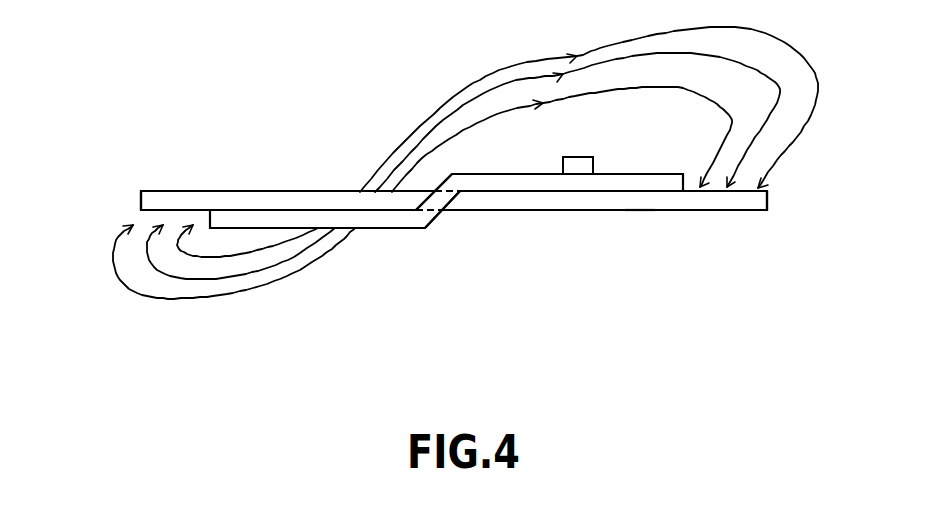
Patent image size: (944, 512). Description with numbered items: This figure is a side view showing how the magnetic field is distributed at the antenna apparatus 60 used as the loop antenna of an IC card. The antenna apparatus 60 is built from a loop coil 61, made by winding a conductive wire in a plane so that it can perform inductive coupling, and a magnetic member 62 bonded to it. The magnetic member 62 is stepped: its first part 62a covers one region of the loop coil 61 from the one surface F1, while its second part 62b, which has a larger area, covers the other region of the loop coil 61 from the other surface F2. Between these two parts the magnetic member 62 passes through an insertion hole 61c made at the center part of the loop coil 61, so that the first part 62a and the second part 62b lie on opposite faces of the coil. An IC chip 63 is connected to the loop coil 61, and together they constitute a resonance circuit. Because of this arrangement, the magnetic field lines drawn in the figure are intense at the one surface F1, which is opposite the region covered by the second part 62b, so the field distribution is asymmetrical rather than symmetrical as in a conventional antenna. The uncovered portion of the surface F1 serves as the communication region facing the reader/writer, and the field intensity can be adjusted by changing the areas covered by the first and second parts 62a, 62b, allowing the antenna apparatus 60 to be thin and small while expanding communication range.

The antenna apparatus 60 is at (345, 72).
The loop coil 61 is at (503, 187).
The insertion hole 61c is at (440, 200).
The magnetic member 62 is at (565, 200).
The first part 62a is at (198, 200).
The second part 62b is at (728, 203).
The IC chip 63 is at (580, 166).
The one surface F1 is at (283, 208).
The other surface F2 is at (638, 193).